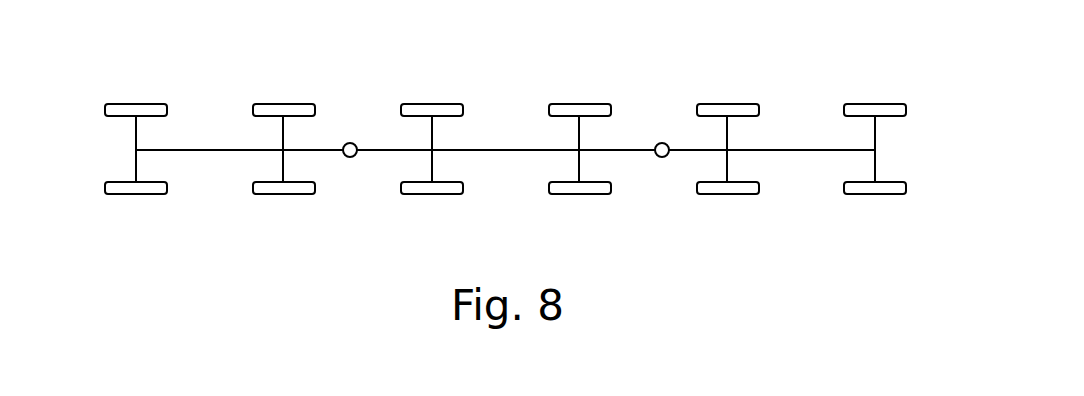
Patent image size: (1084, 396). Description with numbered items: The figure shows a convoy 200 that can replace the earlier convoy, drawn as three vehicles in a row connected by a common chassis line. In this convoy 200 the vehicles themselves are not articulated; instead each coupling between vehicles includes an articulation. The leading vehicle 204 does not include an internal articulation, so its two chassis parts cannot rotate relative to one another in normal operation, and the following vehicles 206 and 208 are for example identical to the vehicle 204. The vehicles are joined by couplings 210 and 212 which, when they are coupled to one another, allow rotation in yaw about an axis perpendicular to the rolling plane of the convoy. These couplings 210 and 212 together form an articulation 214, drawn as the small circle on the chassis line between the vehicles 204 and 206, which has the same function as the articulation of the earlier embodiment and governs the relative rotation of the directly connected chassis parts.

The convoy 200 is at (863, 251).
The vehicle 204 is at (105, 213).
The vehicle 206 is at (402, 213).
The vehicle 208 is at (700, 213).
The coupling 210 is at (328, 149).
The coupling 212 is at (384, 149).
The articulation 214 is at (354, 143).